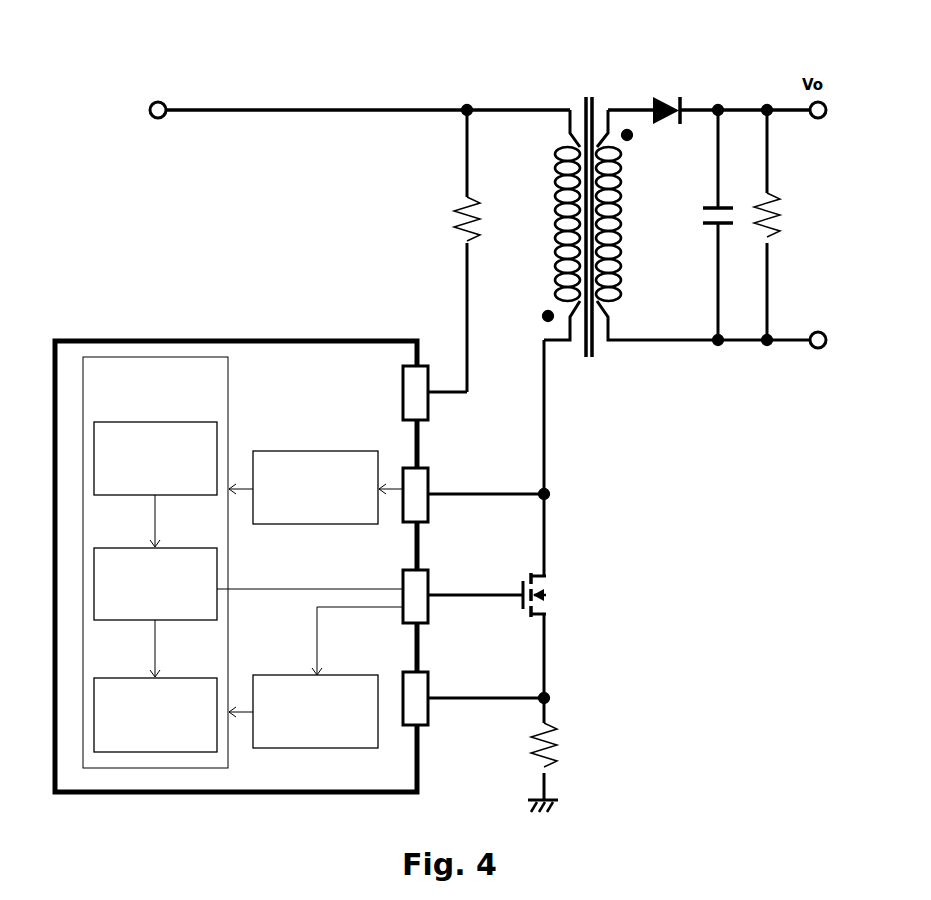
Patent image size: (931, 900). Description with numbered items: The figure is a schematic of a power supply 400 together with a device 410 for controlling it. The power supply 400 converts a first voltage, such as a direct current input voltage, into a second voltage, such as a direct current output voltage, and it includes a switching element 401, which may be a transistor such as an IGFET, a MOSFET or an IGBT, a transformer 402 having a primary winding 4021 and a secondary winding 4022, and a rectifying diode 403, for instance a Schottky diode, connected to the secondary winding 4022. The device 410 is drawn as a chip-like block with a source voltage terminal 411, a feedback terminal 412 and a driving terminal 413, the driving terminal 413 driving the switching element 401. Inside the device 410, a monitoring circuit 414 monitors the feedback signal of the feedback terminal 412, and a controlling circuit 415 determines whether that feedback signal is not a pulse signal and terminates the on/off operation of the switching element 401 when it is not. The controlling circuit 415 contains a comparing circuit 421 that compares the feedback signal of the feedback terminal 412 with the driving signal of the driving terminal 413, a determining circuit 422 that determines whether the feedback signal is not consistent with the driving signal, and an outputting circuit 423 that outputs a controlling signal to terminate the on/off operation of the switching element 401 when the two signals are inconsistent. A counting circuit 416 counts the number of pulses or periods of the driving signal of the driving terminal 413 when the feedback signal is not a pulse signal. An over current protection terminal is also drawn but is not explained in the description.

The power supply 400 is at (277, 74).
The switching element 401 is at (549, 593).
The transformer 402 is at (585, 95).
The primary winding 4021 is at (534, 198).
The secondary winding 4022 is at (634, 198).
The rectifying diode 403 is at (667, 96).
The device 410 is at (196, 341).
The source voltage terminal 411 is at (430, 366).
The feedback terminal 412 is at (430, 468).
The driving terminal 413 is at (430, 570).
The monitoring circuit 414 is at (328, 451).
The controlling circuit 415 is at (229, 420).
The counting circuit 416 is at (326, 675).
The comparing circuit 421 is at (166, 422).
The determining circuit 422 is at (166, 548).
The outputting circuit 423 is at (166, 678).